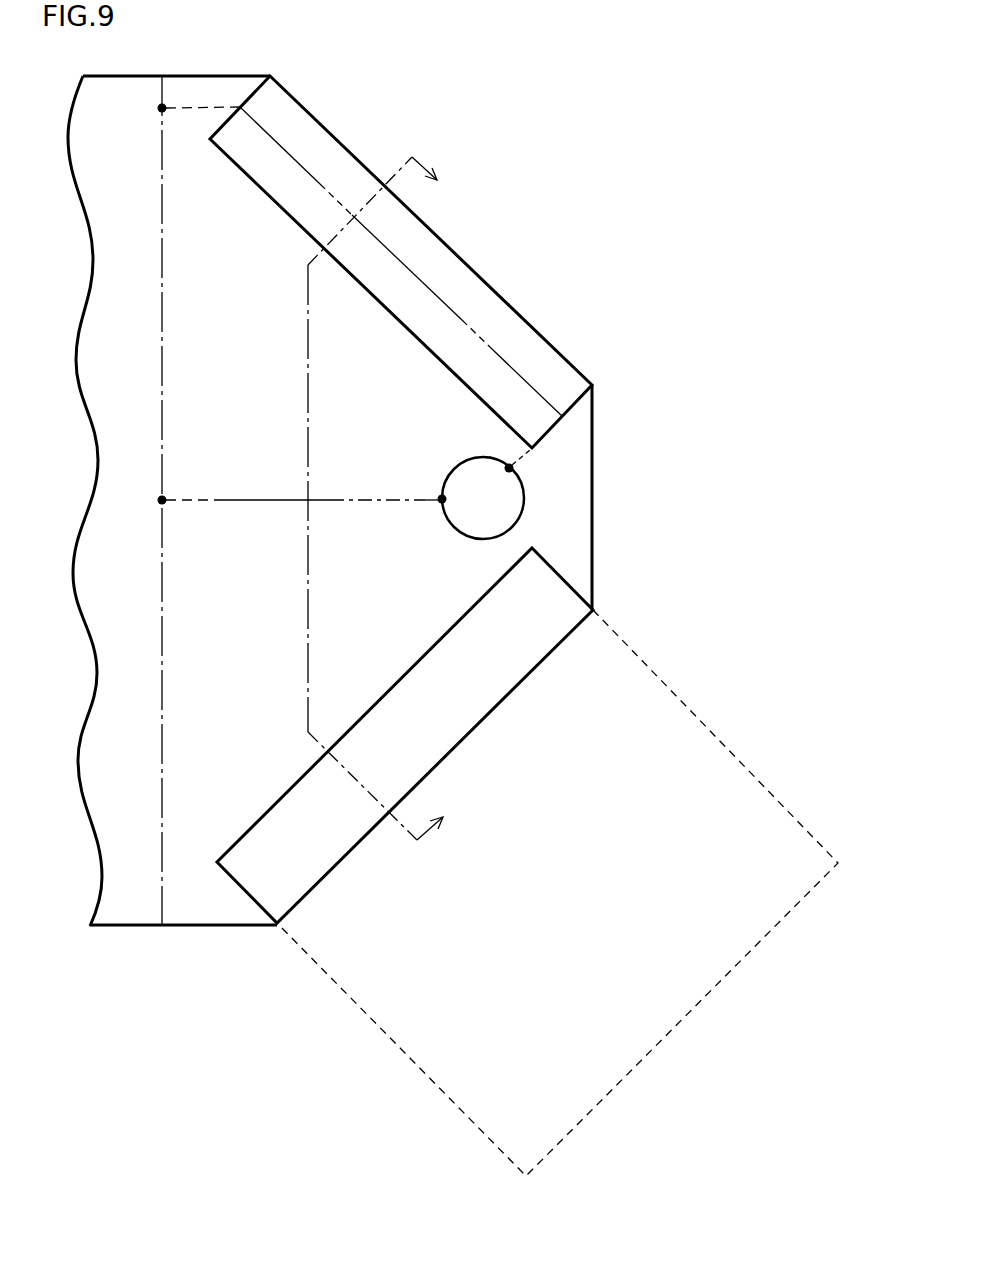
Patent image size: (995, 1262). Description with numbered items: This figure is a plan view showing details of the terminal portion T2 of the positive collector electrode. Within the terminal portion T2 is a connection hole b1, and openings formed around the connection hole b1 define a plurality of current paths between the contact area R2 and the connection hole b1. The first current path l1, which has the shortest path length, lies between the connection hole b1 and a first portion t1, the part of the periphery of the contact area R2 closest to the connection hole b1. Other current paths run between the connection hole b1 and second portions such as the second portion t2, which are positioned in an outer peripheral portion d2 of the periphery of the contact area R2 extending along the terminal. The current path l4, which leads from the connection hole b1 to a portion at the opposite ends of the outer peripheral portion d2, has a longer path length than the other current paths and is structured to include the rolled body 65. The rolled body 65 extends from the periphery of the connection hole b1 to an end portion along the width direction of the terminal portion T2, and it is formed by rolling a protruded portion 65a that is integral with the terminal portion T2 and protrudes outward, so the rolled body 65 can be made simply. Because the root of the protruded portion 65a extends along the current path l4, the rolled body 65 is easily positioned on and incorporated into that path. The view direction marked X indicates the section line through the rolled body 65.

The rolled body 65 is at (522, 340).
The protruded portion 65a is at (676, 714).
The current path l4 is at (302, 167).
The first current path l1 is at (247, 502).
The first portion t1 is at (149, 503).
The second portion t2 is at (183, 110).
The connection hole b1 is at (523, 508).
The terminal portion T2 is at (580, 530).
The outer peripheral portion d2 is at (165, 803).
The contact area R2 is at (165, 938).
The section direction X is at (385, 498).